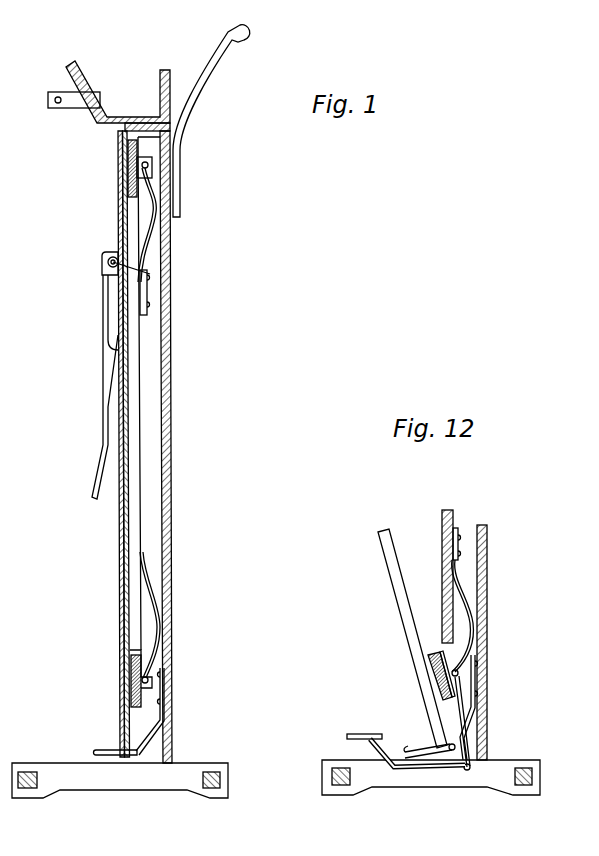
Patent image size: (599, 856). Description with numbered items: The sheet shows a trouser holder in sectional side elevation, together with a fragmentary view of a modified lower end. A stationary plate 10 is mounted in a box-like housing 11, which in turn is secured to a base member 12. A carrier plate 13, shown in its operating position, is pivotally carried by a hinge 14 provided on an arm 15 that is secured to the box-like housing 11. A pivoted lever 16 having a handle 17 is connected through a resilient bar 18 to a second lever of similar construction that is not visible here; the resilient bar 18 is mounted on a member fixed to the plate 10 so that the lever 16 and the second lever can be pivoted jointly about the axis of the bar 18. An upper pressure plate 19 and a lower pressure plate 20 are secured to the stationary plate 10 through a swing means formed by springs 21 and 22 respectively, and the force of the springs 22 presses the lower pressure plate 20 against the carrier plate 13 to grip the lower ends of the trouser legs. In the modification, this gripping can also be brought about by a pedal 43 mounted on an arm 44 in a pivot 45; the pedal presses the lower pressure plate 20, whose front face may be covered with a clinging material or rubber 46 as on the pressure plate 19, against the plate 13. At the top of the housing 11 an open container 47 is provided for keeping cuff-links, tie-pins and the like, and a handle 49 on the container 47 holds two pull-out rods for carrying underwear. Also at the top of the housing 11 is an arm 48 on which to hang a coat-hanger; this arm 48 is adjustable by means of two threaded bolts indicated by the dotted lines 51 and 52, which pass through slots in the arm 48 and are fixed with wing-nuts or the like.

In FIG. 1, the stationary plate 10 is at (130, 368).
In FIG. 12, the stationary plate 10 is at (443, 537).
In FIG. 1, the box-like housing 11 is at (168, 455).
In FIG. 12, the box-like housing 11 is at (482, 563).
In FIG. 1, the base member 12 is at (188, 778).
In FIG. 1, the carrier plate 13 is at (127, 532).
In FIG. 12, the carrier plate 13 is at (395, 587).
In FIG. 1, the hinge 14 is at (138, 755).
In FIG. 1, the arm 15 is at (153, 733).
In FIG. 1, the pivoted lever 16 is at (105, 316).
In FIG. 1, the handle 17 is at (104, 462).
In FIG. 1, the resilient bar 18 is at (150, 274).
In FIG. 1, the upper pressure plate 19 is at (130, 183).
In FIG. 1, the lower pressure plate 20 is at (132, 672).
In FIG. 12, the lower pressure plate 20 is at (428, 662).
In FIG. 1, the springs 21 is at (152, 238).
In FIG. 1, the springs 22 is at (152, 604).
In FIG. 12, the springs 22 is at (463, 592).
In FIG. 12, the pedal 43 is at (353, 735).
In FIG. 12, the arm 44 is at (410, 770).
In FIG. 12, the pivot 45 is at (467, 770).
In FIG. 12, the rubber 46 is at (438, 687).
In FIG. 1, the open container 47 is at (163, 90).
In FIG. 1, the arm 48 is at (205, 75).
In FIG. 1, the handle 49 is at (62, 108).
In FIG. 1, the threaded bolt 51 is at (177, 162).
In FIG. 1, the threaded bolt 52 is at (177, 198).